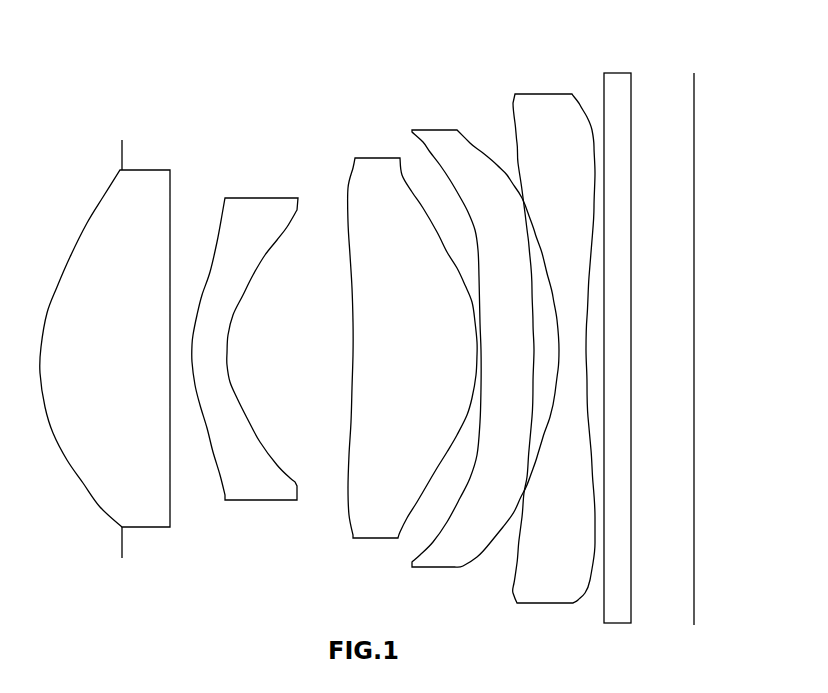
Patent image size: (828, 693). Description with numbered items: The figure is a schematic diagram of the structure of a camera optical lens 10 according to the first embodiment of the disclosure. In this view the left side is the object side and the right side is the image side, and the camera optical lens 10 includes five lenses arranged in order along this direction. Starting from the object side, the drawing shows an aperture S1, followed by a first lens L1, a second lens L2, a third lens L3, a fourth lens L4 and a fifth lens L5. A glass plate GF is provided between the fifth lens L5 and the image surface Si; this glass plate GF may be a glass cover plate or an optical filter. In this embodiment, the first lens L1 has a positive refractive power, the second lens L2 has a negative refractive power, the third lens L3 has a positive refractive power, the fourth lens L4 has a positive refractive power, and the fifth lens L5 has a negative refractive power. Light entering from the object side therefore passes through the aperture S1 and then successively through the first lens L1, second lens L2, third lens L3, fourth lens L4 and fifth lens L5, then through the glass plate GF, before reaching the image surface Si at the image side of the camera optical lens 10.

The camera optical lens 10 is at (382, 59).
The aperture S1 is at (124, 338).
The first lens L1 is at (105, 336).
The second lens L2 is at (245, 336).
The third lens L3 is at (413, 336).
The fourth lens L4 is at (485, 336).
The fifth lens L5 is at (554, 336).
The glass plate GF is at (617, 337).
The image surface Si is at (691, 338).